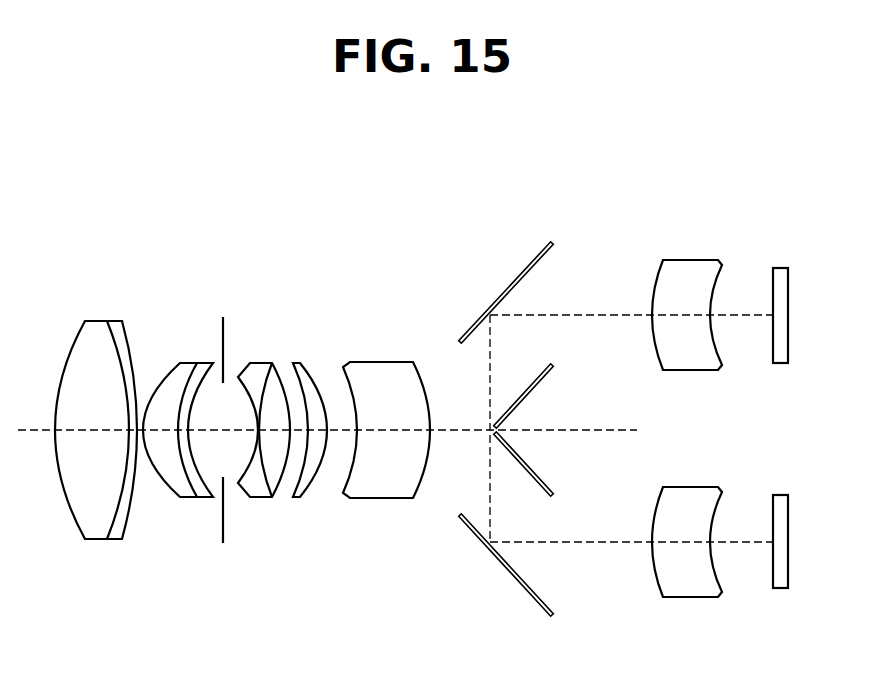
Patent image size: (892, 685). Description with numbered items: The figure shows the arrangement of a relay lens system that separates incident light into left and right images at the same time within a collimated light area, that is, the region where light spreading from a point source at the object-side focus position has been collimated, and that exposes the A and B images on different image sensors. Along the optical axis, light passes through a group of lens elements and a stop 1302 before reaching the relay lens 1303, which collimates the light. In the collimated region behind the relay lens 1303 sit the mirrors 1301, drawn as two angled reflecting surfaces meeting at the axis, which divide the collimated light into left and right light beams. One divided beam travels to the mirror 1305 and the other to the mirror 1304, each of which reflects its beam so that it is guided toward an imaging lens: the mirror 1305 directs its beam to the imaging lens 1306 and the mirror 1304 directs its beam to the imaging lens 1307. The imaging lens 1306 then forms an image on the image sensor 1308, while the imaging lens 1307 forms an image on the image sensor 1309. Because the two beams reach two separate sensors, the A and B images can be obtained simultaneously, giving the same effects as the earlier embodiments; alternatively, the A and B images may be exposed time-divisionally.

The mirrors 1301 is at (548, 479).
The stop 1302 is at (223, 317).
The relay lens 1303 is at (390, 360).
The mirror 1304 is at (518, 585).
The mirror 1305 is at (518, 272).
The imaging lens 1306 is at (690, 260).
The imaging lens 1307 is at (688, 597).
The image sensor 1308 is at (782, 268).
The image sensor 1309 is at (782, 588).